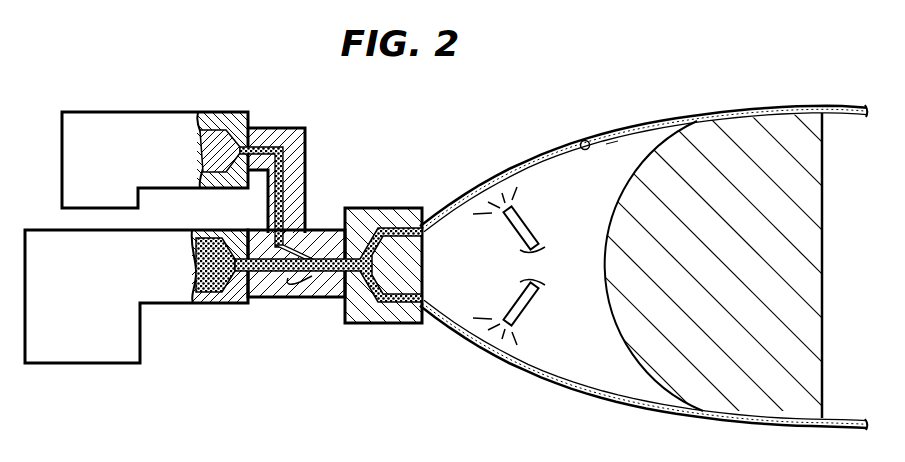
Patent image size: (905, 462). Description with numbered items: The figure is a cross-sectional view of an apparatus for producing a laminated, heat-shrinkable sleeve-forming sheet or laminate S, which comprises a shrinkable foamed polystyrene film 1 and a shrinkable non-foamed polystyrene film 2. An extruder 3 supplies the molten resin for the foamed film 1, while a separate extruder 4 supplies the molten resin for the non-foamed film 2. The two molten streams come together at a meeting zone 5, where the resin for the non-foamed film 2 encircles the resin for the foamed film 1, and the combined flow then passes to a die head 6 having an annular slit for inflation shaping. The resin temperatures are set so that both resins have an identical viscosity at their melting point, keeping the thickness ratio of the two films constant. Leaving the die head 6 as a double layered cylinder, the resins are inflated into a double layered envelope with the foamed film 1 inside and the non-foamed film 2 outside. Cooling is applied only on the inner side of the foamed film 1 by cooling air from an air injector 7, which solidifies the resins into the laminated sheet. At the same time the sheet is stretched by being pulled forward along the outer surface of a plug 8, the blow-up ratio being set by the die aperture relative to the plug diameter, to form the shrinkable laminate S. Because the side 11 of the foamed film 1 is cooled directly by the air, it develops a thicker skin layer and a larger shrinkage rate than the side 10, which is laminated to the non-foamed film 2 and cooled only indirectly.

The foamed polystyrene film 1 is at (543, 165).
The non-foamed polystyrene film 2 is at (505, 170).
The extruder for foamed film 3 is at (157, 300).
The extruder for non-foamed film 4 is at (162, 124).
The meeting zone 5 is at (327, 243).
The die head 6 is at (402, 217).
The air injector 7 is at (537, 234).
The plug 8 is at (698, 145).
The side of foamed film laminated to non-foamed film 10 is at (585, 141).
The side of foamed film directly cooled by air 11 is at (612, 148).
The sleeve-forming laminate S is at (790, 102).